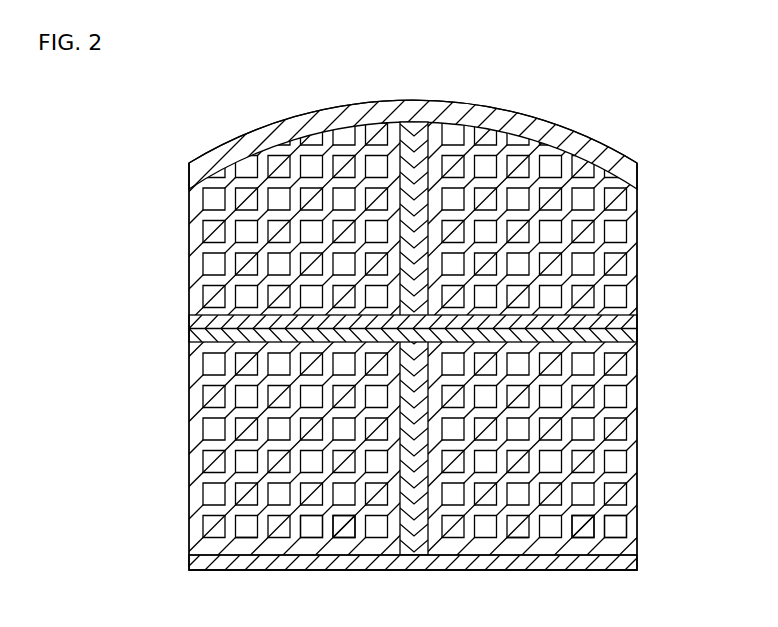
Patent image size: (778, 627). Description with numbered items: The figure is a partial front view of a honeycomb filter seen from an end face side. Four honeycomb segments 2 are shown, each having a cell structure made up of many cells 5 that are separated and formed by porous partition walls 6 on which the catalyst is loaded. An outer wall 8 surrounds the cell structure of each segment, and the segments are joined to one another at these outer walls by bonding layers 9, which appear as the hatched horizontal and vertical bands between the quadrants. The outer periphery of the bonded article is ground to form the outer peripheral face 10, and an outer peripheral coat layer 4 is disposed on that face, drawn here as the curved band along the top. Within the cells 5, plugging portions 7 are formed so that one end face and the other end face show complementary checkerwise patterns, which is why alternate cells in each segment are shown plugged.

The honeycomb segment 2 is at (179, 185).
The outer peripheral coat layer 4 is at (547, 140).
The cell 5 is at (618, 527).
The porous partition wall 6 is at (266, 546).
The plugging portion 7 is at (348, 546).
The outer wall 8 is at (197, 265).
The bonding layer 9 is at (190, 330).
The outer peripheral face 10 is at (618, 170).